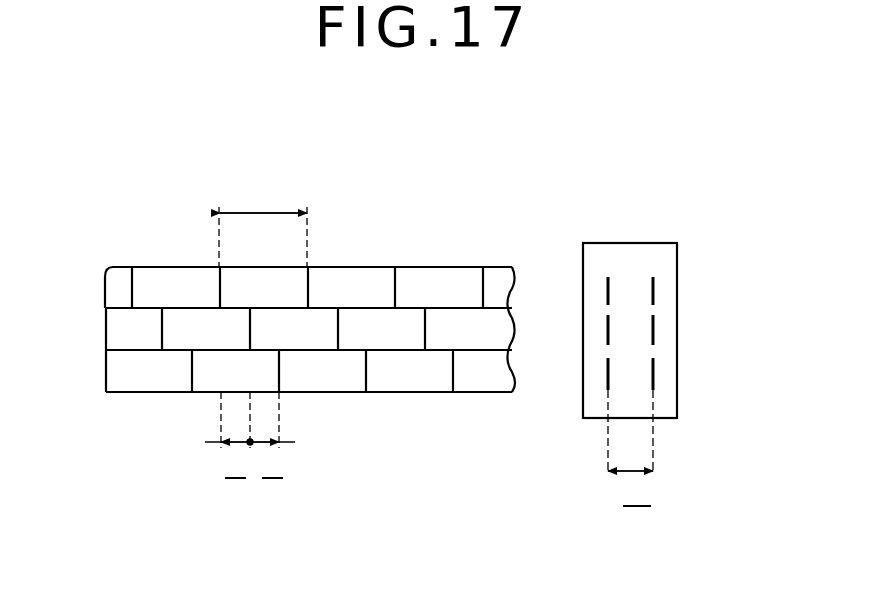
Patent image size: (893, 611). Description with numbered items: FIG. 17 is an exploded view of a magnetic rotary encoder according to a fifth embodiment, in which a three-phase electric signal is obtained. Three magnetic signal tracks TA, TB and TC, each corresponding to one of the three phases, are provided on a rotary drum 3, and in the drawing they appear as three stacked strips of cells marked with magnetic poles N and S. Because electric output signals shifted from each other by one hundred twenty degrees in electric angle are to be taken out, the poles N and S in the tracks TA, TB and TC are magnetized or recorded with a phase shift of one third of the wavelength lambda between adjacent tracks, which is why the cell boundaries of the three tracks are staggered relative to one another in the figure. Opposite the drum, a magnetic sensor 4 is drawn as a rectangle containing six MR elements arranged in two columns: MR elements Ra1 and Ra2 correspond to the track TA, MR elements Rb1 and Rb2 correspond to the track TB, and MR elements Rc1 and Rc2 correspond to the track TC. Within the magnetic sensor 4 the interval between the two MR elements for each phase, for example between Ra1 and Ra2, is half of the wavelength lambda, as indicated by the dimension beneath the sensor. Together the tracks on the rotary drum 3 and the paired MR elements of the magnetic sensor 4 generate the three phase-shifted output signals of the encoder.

The rotary drum 3 is at (159, 267).
The magnetic sensor 4 is at (660, 243).
The magnetic signal track TA is at (105, 290).
The magnetic signal track TB is at (106, 338).
The magnetic signal track TC is at (106, 381).
The MR element Ra1 is at (598, 288).
The MR element Rb1 is at (598, 330).
The MR element Rc1 is at (598, 373).
The MR element Ra2 is at (657, 288).
The MR element Rb2 is at (657, 330).
The MR element Rc2 is at (657, 373).